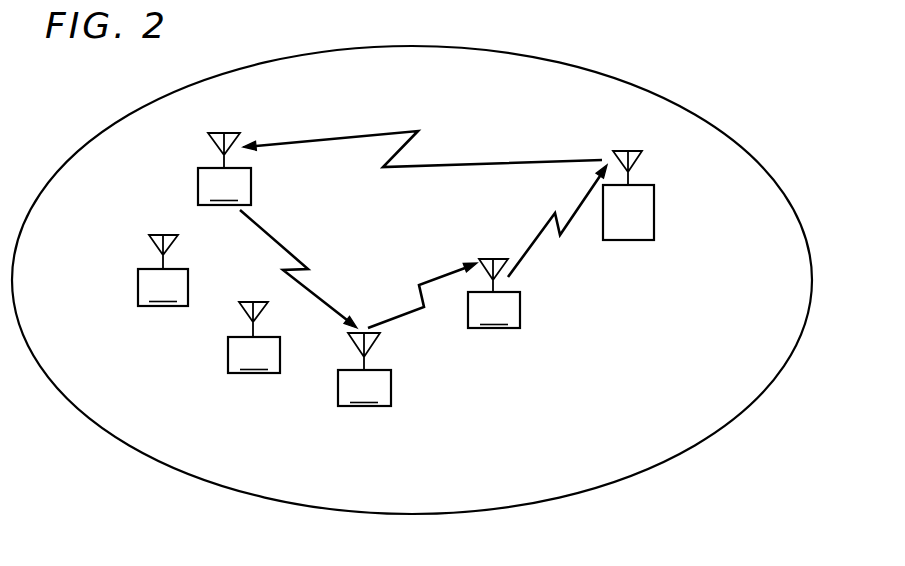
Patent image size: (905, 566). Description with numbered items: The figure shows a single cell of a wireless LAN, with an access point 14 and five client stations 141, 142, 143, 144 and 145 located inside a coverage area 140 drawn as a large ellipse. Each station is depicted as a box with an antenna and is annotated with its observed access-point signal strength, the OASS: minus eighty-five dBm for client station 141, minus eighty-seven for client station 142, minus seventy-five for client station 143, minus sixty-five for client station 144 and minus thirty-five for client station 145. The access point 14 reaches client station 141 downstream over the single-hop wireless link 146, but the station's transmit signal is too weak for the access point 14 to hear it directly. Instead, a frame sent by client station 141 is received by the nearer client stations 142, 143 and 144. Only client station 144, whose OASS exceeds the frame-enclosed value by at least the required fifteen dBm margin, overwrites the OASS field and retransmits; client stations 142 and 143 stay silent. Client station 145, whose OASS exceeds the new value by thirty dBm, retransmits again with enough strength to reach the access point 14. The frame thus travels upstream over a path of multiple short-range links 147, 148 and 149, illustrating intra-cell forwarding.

The access point 14 is at (655, 206).
The coverage area 140 is at (115, 122).
The client station 141 is at (176, 169).
The client station 142 is at (140, 289).
The client station 143 is at (230, 355).
The client station 144 is at (364, 387).
The client station 145 is at (493, 313).
The wireless link 146 is at (381, 130).
The short-range link 147 is at (293, 253).
The short-range link 148 is at (420, 285).
The short-range link 149 is at (548, 215).